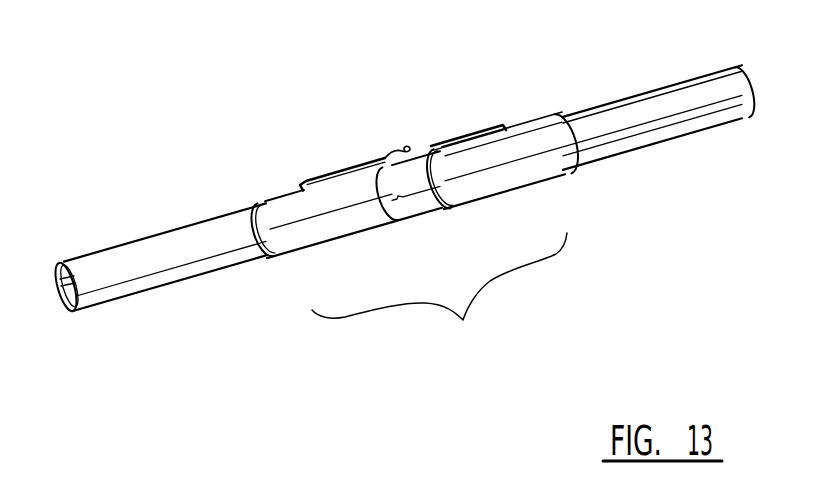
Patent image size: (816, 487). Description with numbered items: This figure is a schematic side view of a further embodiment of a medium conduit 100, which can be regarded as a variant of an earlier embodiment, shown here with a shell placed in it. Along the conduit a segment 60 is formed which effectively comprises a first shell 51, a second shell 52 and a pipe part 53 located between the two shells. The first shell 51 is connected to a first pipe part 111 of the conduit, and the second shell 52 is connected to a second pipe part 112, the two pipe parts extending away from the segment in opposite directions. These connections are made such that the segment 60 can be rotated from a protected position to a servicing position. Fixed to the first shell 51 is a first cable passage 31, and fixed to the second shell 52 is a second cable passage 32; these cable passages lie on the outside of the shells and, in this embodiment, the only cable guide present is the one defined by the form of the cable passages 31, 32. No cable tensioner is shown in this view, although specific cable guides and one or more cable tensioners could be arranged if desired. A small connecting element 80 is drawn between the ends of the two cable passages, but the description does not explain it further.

The medium conduit 100 is at (142, 137).
The first pipe part 111 is at (146, 276).
The second pipe part 112 is at (647, 133).
The first shell 51 is at (331, 236).
The second shell 52 is at (505, 181).
The pipe part 53 is at (413, 210).
The segment 60 is at (439, 295).
The first cable passage 31 is at (378, 132).
The second cable passage 32 is at (414, 124).
The connecting wire 80 is at (411, 151).